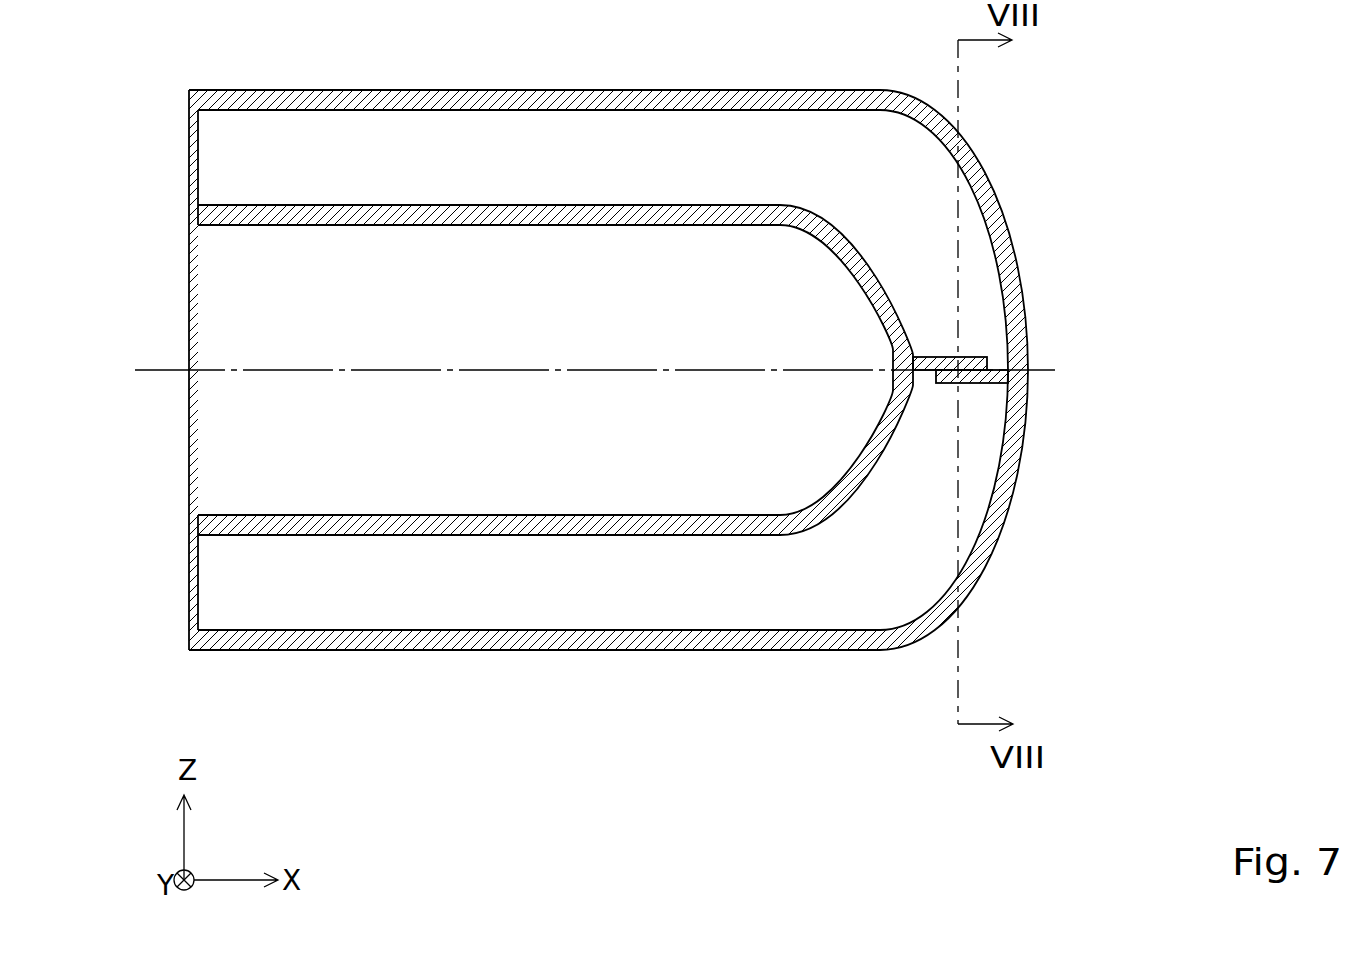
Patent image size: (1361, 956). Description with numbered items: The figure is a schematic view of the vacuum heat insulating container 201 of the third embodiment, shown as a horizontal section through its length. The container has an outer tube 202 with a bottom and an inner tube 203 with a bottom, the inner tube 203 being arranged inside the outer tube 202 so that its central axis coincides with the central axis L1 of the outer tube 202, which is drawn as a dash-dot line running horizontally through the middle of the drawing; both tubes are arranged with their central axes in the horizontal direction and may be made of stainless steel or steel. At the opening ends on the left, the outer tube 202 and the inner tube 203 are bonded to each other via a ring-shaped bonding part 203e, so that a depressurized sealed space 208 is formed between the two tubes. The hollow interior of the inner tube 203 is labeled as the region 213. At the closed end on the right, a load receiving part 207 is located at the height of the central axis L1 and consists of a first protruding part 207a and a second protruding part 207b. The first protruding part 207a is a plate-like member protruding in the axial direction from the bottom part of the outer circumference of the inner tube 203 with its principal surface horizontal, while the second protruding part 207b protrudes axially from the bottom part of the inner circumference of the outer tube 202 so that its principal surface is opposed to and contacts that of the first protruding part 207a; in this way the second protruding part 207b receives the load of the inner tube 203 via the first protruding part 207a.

The vacuum heat insulating container 201 is at (197, 26).
The outer tube 202 is at (606, 90).
The inner tube 203 is at (535, 200).
The ring-shaped bonding part 203e is at (188, 585).
The load receiving part 207 is at (680, 380).
The first protruding part 207a is at (986, 362).
The second protruding part 207b is at (986, 383).
The depressurized sealed space 208 is at (324, 142).
The inner passage 213 is at (210, 304).
The central axis L1 is at (400, 373).